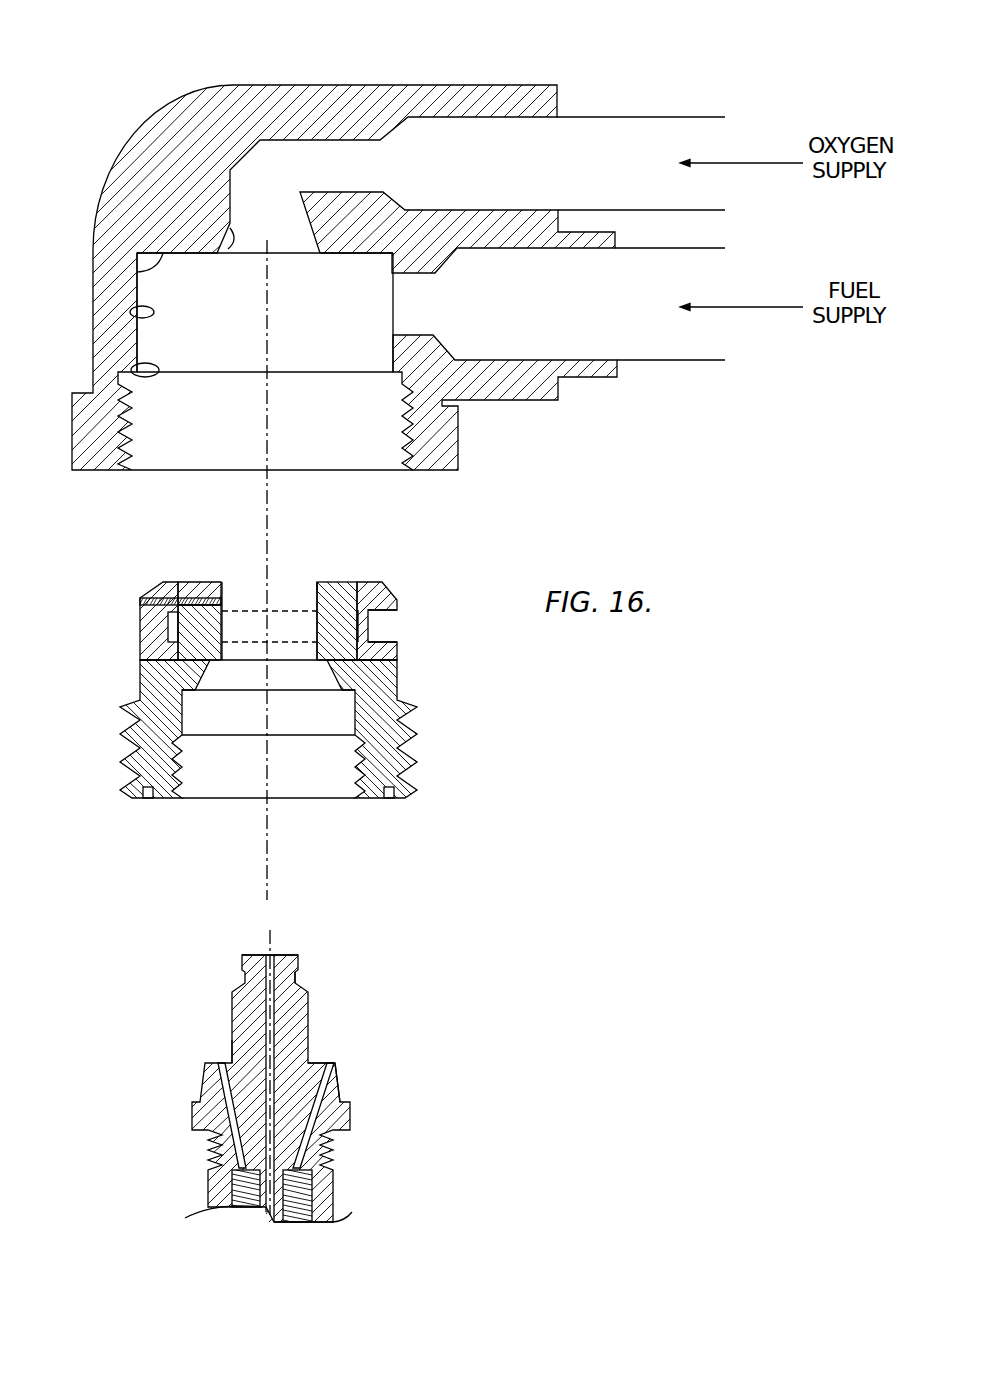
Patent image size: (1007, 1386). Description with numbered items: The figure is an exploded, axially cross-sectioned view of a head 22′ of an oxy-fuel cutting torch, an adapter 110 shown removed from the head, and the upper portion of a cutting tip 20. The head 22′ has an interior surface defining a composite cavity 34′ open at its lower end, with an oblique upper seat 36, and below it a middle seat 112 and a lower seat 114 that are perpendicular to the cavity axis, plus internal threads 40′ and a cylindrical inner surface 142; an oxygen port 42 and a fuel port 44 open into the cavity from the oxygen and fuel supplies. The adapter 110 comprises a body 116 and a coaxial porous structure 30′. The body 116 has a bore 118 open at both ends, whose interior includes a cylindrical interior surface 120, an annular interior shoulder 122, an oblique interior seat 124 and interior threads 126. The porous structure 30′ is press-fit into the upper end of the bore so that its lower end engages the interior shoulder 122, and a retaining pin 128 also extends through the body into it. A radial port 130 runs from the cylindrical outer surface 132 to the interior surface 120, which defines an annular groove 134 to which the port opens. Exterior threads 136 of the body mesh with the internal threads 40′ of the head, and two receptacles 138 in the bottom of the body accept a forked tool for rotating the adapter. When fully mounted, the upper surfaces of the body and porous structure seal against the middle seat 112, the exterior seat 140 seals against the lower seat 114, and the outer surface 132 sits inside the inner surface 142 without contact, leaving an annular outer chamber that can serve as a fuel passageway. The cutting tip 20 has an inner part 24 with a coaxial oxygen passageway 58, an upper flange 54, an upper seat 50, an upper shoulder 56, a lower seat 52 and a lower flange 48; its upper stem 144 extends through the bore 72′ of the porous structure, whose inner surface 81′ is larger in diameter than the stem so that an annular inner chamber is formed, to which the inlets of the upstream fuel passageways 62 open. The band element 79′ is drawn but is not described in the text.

The head 22′ is at (414, 78).
The oxygen port 42 is at (522, 150).
The upper seat 36 is at (226, 237).
The composite cavity 34′ is at (154, 459).
The internal threads 40′ is at (408, 446).
The fuel port 44 is at (522, 322).
The middle seat 112 is at (137, 272).
The cylindrical inner surface 142 is at (135, 312).
The lower seat 114 is at (150, 370).
The adapter 110 is at (92, 814).
The body 116 is at (120, 762).
The exterior threads 136 is at (420, 748).
The receptacles 138 is at (148, 798).
The interior seat 124 is at (207, 668).
The bore 118 is at (298, 766).
The interior threads 126 is at (178, 770).
The exterior seat 140 is at (140, 706).
The retaining pin 128 is at (140, 598).
The gasket 79′ is at (162, 583).
The interior shoulder 122 is at (200, 657).
The cylindrical interior surface 120 is at (345, 584).
The cylindrical outer surface 132 is at (400, 650).
The port 130 is at (390, 628).
The annular groove 134 is at (245, 606).
The bore 72′ is at (253, 594).
The inner surface 81′ is at (317, 592).
The porous structure 30′ is at (320, 597).
The cutting tip 20 is at (291, 1064).
The inner part 24 is at (228, 1002).
The oxygen passageway 58 is at (266, 946).
The upstream fuel passageways 62 is at (218, 1064).
The lower flange 48 is at (352, 1117).
The upper flange 54 is at (298, 962).
The upper seat 50 is at (308, 990).
The upper stem 144 is at (232, 1048).
The upper shoulder 56 is at (330, 1062).
The lower seat 52 is at (345, 1072).